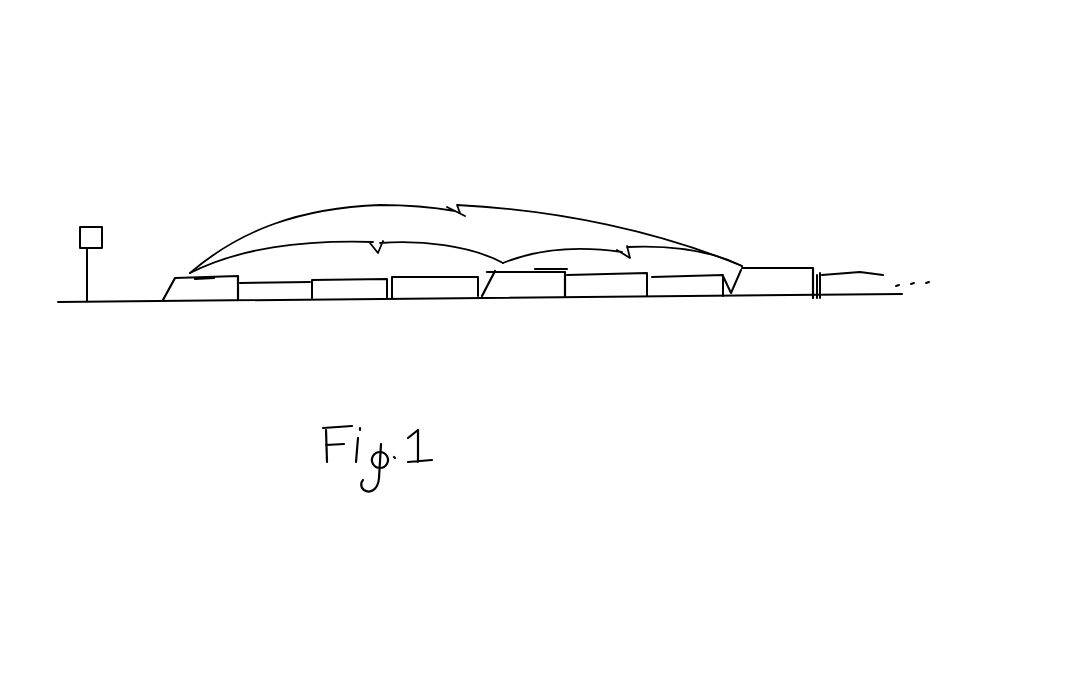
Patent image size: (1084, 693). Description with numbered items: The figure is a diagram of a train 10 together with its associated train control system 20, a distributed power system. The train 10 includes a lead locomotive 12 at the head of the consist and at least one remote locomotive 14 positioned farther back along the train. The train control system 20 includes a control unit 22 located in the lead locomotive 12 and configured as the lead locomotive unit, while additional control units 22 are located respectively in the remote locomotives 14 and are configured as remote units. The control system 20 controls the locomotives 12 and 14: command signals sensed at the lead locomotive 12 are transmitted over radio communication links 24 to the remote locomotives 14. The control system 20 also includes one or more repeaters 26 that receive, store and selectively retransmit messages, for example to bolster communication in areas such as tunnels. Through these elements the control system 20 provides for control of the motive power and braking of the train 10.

The train 10 is at (317, 344).
The lead locomotive 12 is at (203, 302).
The remote locomotive 14 is at (525, 300).
The train control system 20 is at (767, 65).
The control unit 22 is at (190, 273).
The radio communication link 24 is at (391, 188).
The repeater 26 is at (94, 225).